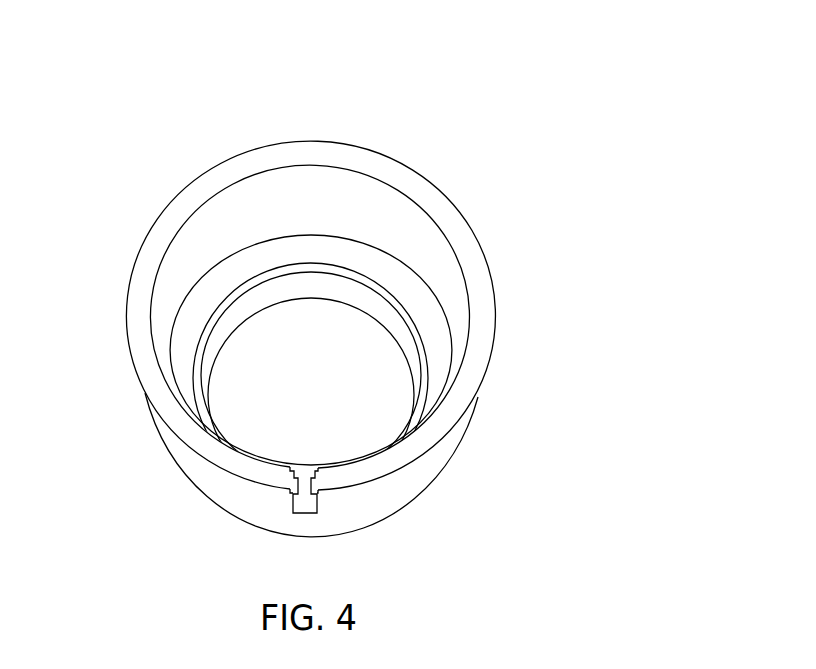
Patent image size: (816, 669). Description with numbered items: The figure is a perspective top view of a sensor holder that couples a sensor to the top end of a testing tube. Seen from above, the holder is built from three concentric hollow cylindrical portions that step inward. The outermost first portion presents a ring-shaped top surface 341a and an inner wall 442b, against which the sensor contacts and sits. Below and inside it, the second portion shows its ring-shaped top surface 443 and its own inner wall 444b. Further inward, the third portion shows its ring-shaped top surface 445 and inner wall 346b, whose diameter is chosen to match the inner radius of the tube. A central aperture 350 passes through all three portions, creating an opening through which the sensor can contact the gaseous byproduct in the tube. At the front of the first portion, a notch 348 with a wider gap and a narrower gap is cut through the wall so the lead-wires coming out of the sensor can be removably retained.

The ring-shaped top surface 341a is at (417, 190).
The inner wall 442b is at (407, 238).
The ring-shaped top surface 443 is at (438, 380).
The inner wall 444b is at (203, 332).
The ring-shaped top surface 445 is at (353, 280).
The inner wall 346b is at (325, 287).
The aperture 350 is at (331, 397).
The notch 348 is at (306, 518).